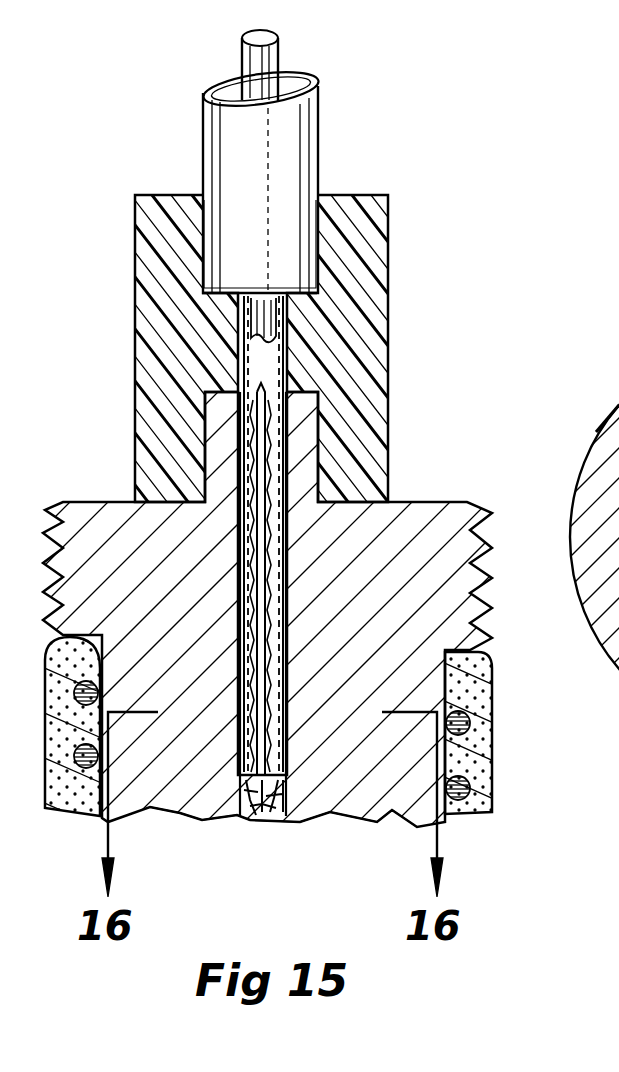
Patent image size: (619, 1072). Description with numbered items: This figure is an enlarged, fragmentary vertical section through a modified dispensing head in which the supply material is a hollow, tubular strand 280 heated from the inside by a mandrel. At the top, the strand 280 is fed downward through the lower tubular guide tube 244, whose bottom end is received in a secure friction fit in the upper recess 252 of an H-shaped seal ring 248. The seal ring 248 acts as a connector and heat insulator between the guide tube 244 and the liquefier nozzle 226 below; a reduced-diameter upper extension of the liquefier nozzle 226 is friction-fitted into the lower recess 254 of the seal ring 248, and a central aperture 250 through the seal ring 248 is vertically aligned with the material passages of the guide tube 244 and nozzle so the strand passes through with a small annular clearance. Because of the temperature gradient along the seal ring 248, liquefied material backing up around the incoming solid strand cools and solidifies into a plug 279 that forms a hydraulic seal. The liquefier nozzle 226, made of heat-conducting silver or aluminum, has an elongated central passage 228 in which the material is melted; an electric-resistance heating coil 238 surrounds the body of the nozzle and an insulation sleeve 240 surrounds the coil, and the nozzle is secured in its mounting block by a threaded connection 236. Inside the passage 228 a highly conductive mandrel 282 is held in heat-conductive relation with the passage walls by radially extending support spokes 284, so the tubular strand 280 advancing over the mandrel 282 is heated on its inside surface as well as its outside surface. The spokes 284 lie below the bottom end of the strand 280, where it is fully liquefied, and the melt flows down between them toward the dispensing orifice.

The tubular strand 280 is at (242, 54).
The guide tube 244 is at (318, 122).
The upper recess 252 is at (212, 206).
The seal ring 248 is at (389, 221).
The central aperture 250 is at (246, 320).
The mandrel 282 is at (263, 388).
The plug 279 is at (240, 394).
The lower recess 254 is at (305, 424).
The threaded connection 236 is at (495, 520).
The heating coil 238 is at (495, 722).
The insulation sleeve 240 is at (493, 812).
The support spokes 284 is at (262, 777).
The central passage 228 is at (278, 812).
The liquefier nozzle 226 is at (402, 800).